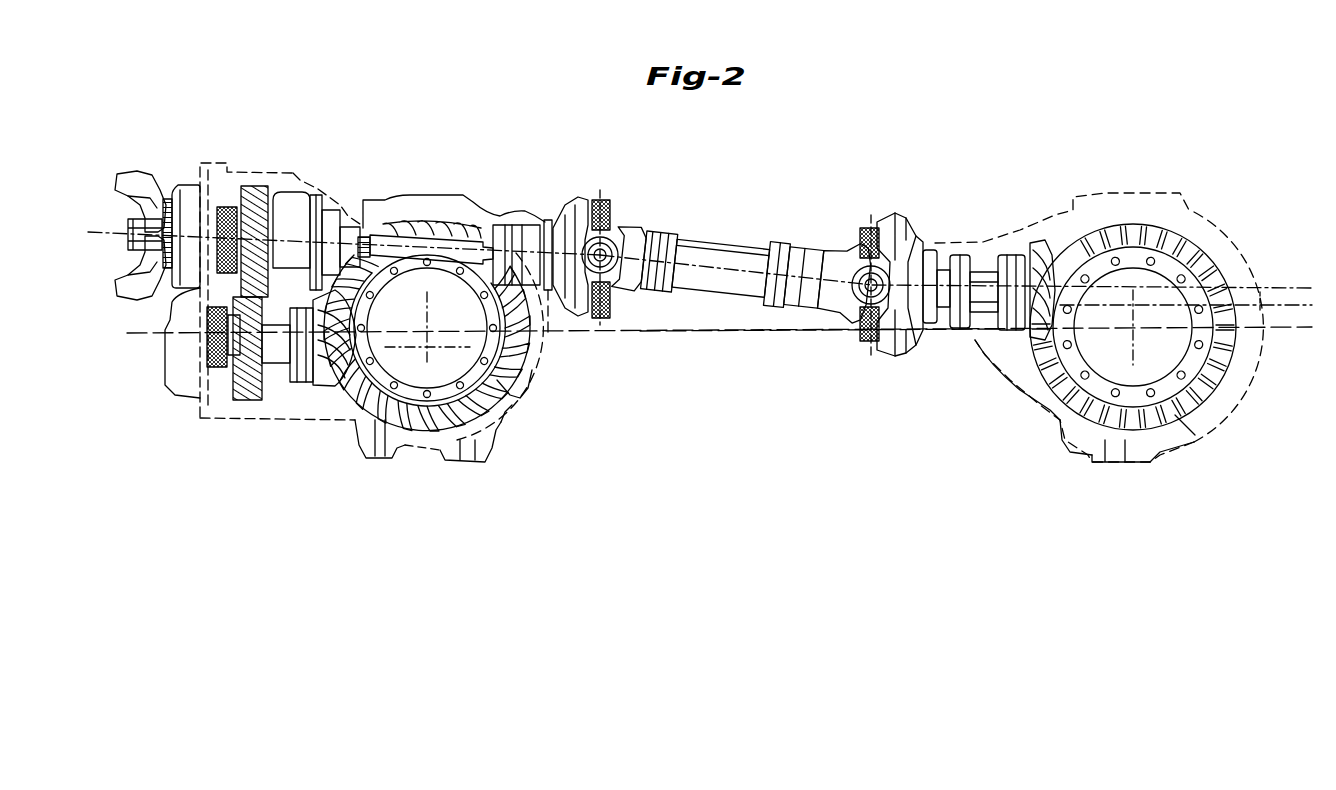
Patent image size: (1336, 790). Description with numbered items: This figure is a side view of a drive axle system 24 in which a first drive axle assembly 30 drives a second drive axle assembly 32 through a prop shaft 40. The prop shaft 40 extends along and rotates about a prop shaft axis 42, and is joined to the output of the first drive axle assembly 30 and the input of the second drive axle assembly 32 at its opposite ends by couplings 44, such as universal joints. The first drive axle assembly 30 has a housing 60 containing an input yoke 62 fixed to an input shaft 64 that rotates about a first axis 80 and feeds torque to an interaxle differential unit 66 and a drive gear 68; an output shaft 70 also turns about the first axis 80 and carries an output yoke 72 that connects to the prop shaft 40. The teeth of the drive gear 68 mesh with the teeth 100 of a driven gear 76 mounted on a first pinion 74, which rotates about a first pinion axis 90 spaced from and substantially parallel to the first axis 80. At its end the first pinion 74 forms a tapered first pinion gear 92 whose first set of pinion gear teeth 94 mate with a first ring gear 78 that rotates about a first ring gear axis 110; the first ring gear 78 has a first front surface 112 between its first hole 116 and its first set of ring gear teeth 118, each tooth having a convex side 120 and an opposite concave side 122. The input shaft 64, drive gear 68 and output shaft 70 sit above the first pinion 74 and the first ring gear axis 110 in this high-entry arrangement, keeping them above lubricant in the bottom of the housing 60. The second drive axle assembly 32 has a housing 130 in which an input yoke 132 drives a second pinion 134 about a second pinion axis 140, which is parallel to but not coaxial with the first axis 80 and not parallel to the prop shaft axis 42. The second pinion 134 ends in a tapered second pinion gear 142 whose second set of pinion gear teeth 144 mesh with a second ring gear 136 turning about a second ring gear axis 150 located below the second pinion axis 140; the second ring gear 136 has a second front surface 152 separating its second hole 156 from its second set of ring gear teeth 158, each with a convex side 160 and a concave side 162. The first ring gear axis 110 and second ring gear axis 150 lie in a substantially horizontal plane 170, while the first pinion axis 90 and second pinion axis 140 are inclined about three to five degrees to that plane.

The driveline assembly 24 is at (186, 92).
The first drive axle assembly 30 is at (222, 163).
The second drive axle assembly 32 is at (1190, 200).
The prop shaft 40 is at (722, 242).
The prop shaft axis 42 is at (755, 272).
The couplings 44 is at (603, 200).
The housing 60 is at (440, 190).
The input yoke 62 is at (132, 170).
The input shaft 64 is at (272, 250).
The interaxle differential unit 66 is at (293, 173).
The drive gear 68 is at (255, 186).
The output shaft 70 is at (405, 245).
The output yoke 72 is at (576, 192).
The first pinion 74 is at (277, 365).
The driven gear 76 is at (200, 417).
The first ring gear 78 is at (378, 448).
The first axis 80 is at (113, 230).
The first pinion axis 90 is at (150, 337).
The first pinion gear 92 is at (323, 395).
The first set of pinion gear teeth 94 is at (330, 388).
The teeth 100 is at (247, 400).
The first ring gear axis 110 is at (428, 325).
The first front surface 112 is at (497, 338).
The first hole 116 is at (507, 373).
The first set of ring gear teeth 118 is at (497, 407).
The convex side 120 is at (450, 445).
The concave side 122 is at (480, 440).
The housing 130 is at (1252, 385).
The input yoke 132 is at (895, 222).
The second pinion 134 is at (990, 262).
The second ring gear 136 is at (1208, 262).
The second pinion axis 140 is at (1278, 307).
The second pinion gear 142 is at (1010, 255).
The second set of pinion gear teeth 144 is at (1050, 258).
The second ring gear axis 150 is at (1138, 330).
The second front surface 152 is at (1060, 373).
The second hole 156 is at (1065, 432).
The second set of ring gear teeth 158 is at (1108, 450).
The convex side 160 is at (1180, 440).
The concave side 162 is at (1187, 410).
The horizontal plane 170 is at (743, 328).